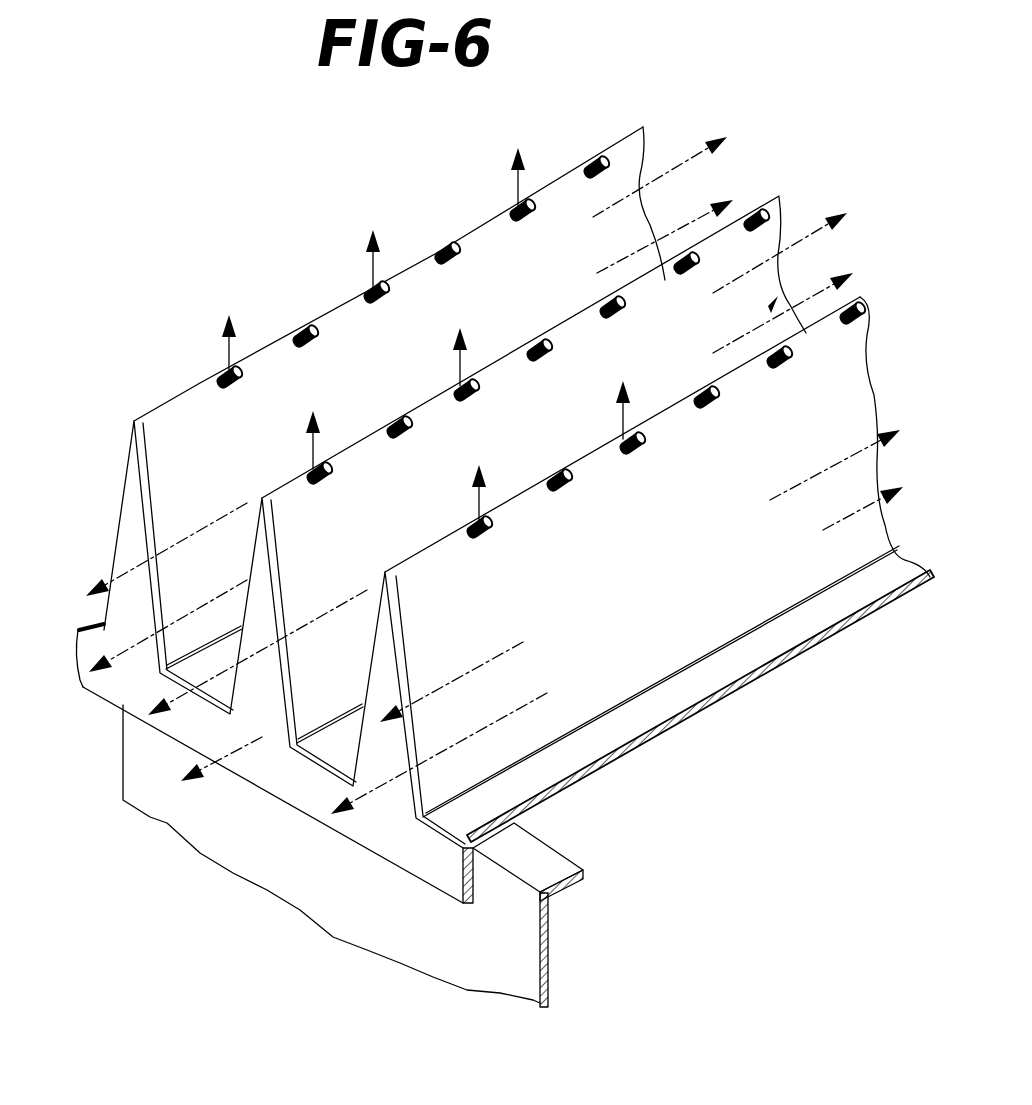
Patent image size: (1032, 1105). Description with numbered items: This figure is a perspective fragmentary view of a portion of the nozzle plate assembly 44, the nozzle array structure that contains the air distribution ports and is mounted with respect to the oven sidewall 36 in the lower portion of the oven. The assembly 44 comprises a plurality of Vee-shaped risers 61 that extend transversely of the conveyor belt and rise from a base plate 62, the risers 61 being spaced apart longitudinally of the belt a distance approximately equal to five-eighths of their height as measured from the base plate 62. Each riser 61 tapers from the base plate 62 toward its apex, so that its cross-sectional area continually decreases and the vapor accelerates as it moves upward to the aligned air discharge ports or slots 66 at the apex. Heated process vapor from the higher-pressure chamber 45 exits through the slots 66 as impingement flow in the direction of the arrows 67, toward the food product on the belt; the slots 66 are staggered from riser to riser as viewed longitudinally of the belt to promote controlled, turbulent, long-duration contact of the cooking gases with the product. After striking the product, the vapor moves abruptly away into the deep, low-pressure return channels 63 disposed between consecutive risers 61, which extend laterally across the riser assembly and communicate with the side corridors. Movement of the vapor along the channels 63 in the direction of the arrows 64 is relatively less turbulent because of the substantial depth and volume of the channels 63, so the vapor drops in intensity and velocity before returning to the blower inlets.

The sidewall 36 is at (550, 963).
The lower nozzle plate assembly 44 is at (291, 312).
The upper chamber 45 is at (653, 861).
The Vee-shaped riser 61 is at (255, 557).
The base plate 62 is at (654, 716).
The low-pressure flow channel 63 is at (202, 604).
The arrows 64 is at (120, 657).
The air discharge ports or slots 66 is at (242, 388).
The arrows 67 is at (224, 352).